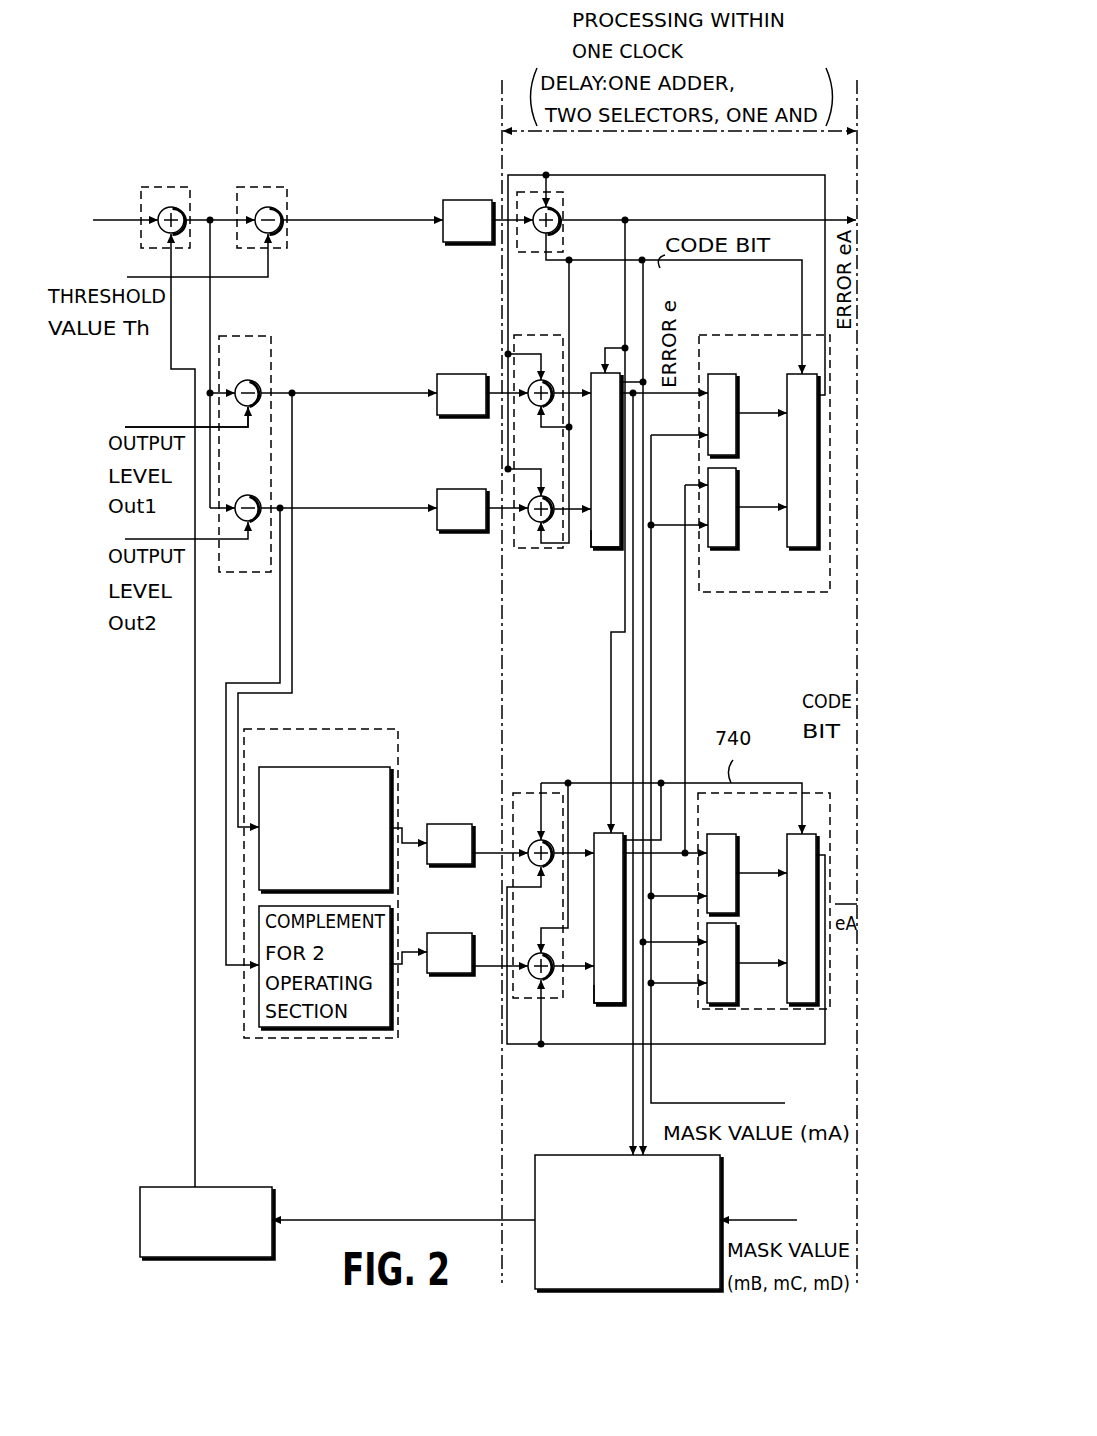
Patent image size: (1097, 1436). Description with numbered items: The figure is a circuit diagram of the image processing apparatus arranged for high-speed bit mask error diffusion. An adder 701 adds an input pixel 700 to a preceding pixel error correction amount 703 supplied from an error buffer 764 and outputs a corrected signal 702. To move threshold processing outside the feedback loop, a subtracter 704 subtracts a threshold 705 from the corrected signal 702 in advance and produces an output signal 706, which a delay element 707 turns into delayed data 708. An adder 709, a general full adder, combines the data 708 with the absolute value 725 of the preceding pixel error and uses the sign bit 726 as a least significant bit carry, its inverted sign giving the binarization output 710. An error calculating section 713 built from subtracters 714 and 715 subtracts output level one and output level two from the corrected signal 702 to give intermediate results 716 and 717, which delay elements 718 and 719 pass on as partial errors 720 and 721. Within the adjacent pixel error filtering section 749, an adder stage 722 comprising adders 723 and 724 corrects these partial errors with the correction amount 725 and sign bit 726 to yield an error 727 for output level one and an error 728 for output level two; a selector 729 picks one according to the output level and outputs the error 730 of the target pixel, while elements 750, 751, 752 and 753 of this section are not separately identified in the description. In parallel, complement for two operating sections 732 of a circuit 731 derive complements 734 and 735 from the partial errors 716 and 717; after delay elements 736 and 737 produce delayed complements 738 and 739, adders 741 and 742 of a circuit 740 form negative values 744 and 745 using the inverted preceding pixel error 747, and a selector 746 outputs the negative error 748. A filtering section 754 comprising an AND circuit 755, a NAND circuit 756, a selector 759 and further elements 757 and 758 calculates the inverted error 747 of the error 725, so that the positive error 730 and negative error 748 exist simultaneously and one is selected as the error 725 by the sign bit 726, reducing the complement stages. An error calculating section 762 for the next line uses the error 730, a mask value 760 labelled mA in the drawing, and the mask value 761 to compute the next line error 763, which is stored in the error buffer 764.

The input pixel 700 is at (117, 213).
The adder 701 is at (162, 187).
The corrected signal 702 is at (207, 213).
The preceding pixel error correction amount 703 is at (161, 710).
The subtracter 704 is at (261, 187).
The threshold 705 is at (268, 270).
The output signal 706 is at (338, 213).
The delay element 707 is at (468, 198).
The data 708 is at (494, 230).
The adder 709 is at (565, 207).
The binarization output 710 is at (704, 219).
The error calculating section 713 is at (240, 334).
The subtracter 714 is at (249, 380).
The subtracter 715 is at (249, 495).
The intermediate result 716 is at (375, 386).
The intermediate result 717 is at (375, 503).
The delay element 718 is at (462, 372).
The delay element 719 is at (462, 488).
The partial error 720 is at (490, 405).
The partial error 721 is at (494, 522).
The adder 722 is at (537, 334).
The adder 723 is at (533, 408).
The adder 724 is at (533, 525).
The absolute value of preceding pixel error 725 is at (659, 174).
The sign bit 726 is at (677, 388).
The error for output level Out1 727 is at (588, 372).
The error for output level Out2 728 is at (575, 515).
The selector 729 is at (594, 548).
The error 730 is at (670, 396).
The circuit 731 is at (318, 729).
The complement for 2 operating section 732 is at (346, 766).
The complement 734 is at (405, 827).
The complement 735 is at (404, 966).
The delay element 736 is at (451, 822).
The delay element 737 is at (451, 931).
The delayed complement 738 is at (478, 856).
The delayed complement 739 is at (478, 968).
The circuit 740 is at (530, 792).
The adder 741 is at (549, 868).
The adder 742 is at (532, 981).
The negative value 744 is at (591, 832).
The negative value 745 is at (576, 970).
The selector 746 is at (604, 1006).
The inverted error 747 is at (813, 1046).
The negative error 748 is at (673, 856).
The error filtering section 749 is at (743, 334).
The AND gate 750 is at (722, 373).
The NAND gate 751 is at (760, 416).
The NAND output line 752 is at (758, 506).
The selector 753 is at (790, 548).
The filtering section 754 is at (826, 792).
The AND circuit 755 is at (722, 833).
The NAND circuit 756 is at (715, 1005).
The AND output line 757 is at (759, 875).
The NAND output line 758 is at (758, 962).
The selector 759 is at (789, 1005).
The mask value mA line 760 is at (737, 777).
The mask value 761 is at (778, 1223).
The error calculating section 762 is at (722, 1176).
The error for a next line 763 is at (522, 1219).
The error buffer 764 is at (237, 1186).